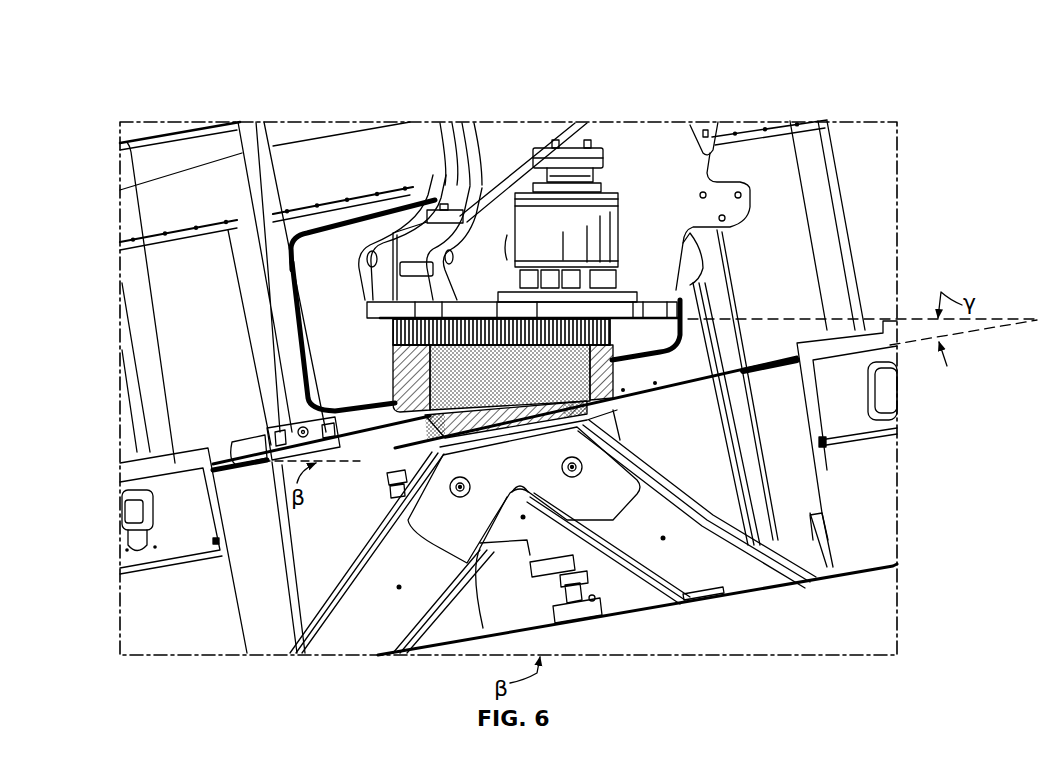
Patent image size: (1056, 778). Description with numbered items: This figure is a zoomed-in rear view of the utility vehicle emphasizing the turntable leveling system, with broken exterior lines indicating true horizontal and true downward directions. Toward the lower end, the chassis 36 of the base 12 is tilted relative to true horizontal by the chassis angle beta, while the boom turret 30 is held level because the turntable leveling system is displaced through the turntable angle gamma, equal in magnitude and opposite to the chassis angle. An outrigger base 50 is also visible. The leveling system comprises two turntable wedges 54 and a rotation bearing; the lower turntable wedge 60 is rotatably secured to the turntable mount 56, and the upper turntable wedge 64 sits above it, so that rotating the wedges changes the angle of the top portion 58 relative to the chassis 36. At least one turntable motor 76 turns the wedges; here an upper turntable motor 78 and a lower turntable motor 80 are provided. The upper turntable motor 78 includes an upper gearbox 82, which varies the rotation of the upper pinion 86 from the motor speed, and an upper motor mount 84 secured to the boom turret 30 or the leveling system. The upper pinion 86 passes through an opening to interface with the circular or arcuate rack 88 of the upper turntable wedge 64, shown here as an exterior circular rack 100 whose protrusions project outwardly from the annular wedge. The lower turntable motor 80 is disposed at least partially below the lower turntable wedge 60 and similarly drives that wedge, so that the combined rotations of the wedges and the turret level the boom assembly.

The base 12 is at (883, 641).
The boom turret 30 is at (664, 142).
The chassis 36 is at (893, 573).
The outrigger base 50 is at (433, 533).
The turntable wedge 54 is at (637, 375).
The turntable mount 56 is at (613, 425).
The top portion 58 is at (467, 311).
The lower turntable wedge 60 is at (402, 443).
The upper turntable wedge 64 is at (393, 363).
The turntable motor 76 is at (615, 140).
The upper turntable motor 78 is at (600, 176).
The lower turntable motor 80 is at (590, 623).
The upper gearbox 82 is at (607, 210).
The upper motor mount 84 is at (620, 295).
The upper pinion 86 is at (580, 325).
The circular or arcuate rack 88 is at (563, 537).
The exterior circular rack 100 is at (382, 336).